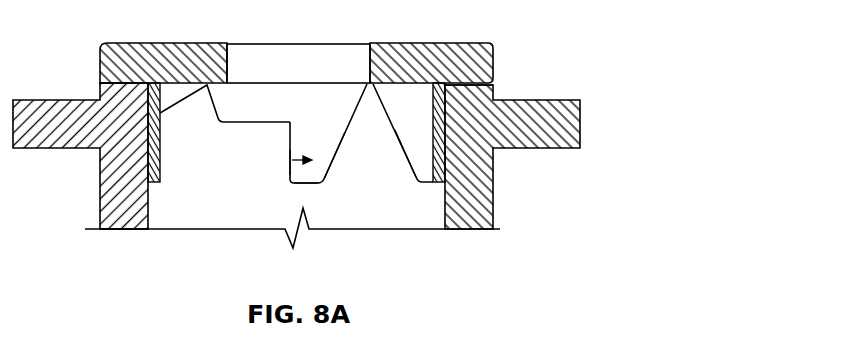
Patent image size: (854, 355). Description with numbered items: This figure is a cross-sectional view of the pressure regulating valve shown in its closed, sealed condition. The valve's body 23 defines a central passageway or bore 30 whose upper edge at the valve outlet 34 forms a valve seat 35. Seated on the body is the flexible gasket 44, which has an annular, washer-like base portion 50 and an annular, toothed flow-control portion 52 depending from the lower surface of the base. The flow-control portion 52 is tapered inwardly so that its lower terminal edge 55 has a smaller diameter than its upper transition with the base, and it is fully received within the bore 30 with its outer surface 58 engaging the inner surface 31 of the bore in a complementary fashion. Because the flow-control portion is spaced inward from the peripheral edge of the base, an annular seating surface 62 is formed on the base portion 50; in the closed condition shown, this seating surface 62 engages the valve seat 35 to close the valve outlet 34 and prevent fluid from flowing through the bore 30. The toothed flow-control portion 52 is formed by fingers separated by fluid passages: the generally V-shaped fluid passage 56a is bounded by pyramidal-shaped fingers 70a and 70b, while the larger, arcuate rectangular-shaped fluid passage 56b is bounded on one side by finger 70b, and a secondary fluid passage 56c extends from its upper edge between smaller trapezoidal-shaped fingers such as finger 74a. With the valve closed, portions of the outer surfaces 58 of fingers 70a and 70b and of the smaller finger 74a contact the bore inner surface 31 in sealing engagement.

The body 23 is at (581, 125).
The central passageway or bore 30 is at (408, 220).
The inner surface of the valve bore 31 is at (148, 212).
The valve outlet 34 is at (496, 84).
The valve seat 35 is at (119, 80).
The gasket 44 is at (490, 40).
The base portion 50 is at (345, 64).
The flow-control portion 52 is at (298, 158).
The terminal edge 55 is at (308, 184).
The fluid passage 56a is at (395, 152).
The fluid passage 56b is at (223, 193).
The secondary fluid passage 56c is at (213, 142).
The outer surface 58 is at (147, 175).
The seating surface 62 is at (113, 90).
The pyramidal-shaped finger 70a is at (415, 157).
The pyramidal-shaped finger 70b is at (318, 150).
The trapezoidal-shaped finger 74a is at (270, 110).